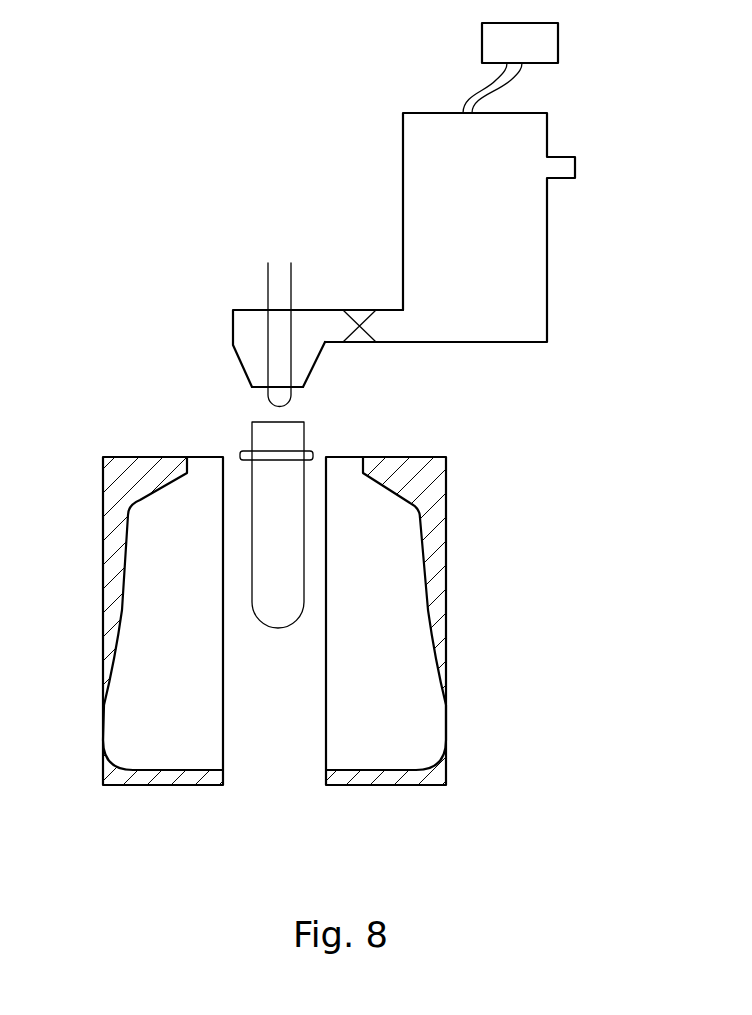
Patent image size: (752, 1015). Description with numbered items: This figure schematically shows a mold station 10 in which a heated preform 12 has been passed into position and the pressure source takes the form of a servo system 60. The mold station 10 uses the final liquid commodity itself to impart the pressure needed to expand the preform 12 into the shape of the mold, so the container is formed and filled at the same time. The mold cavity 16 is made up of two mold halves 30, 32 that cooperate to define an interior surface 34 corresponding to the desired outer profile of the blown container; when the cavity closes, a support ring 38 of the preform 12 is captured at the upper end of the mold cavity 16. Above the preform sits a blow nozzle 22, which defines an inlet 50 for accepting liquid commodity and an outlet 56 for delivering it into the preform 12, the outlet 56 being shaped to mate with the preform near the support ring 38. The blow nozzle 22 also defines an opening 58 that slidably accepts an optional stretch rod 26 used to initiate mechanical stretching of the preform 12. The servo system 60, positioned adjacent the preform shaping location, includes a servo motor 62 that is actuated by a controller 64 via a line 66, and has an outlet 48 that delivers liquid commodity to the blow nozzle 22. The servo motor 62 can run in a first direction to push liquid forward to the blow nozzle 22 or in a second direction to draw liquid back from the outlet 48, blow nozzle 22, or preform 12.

The mold station 10 is at (186, 163).
The preform 12 is at (295, 475).
The mold cavity 16 is at (418, 533).
The blow nozzle 22 is at (233, 327).
The stretch rod 26 is at (267, 270).
The mold half 30 is at (103, 512).
The mold half 32 is at (446, 568).
The interior surface 34 is at (118, 611).
The support ring 38 is at (240, 455).
The outlet 48 is at (368, 313).
The inlet 50 is at (353, 328).
The outlet 56 is at (252, 406).
The opening 58 is at (267, 308).
The servo system 60 is at (403, 124).
The servo motor 62 is at (523, 257).
The controller 64 is at (558, 47).
The line 66 is at (478, 84).